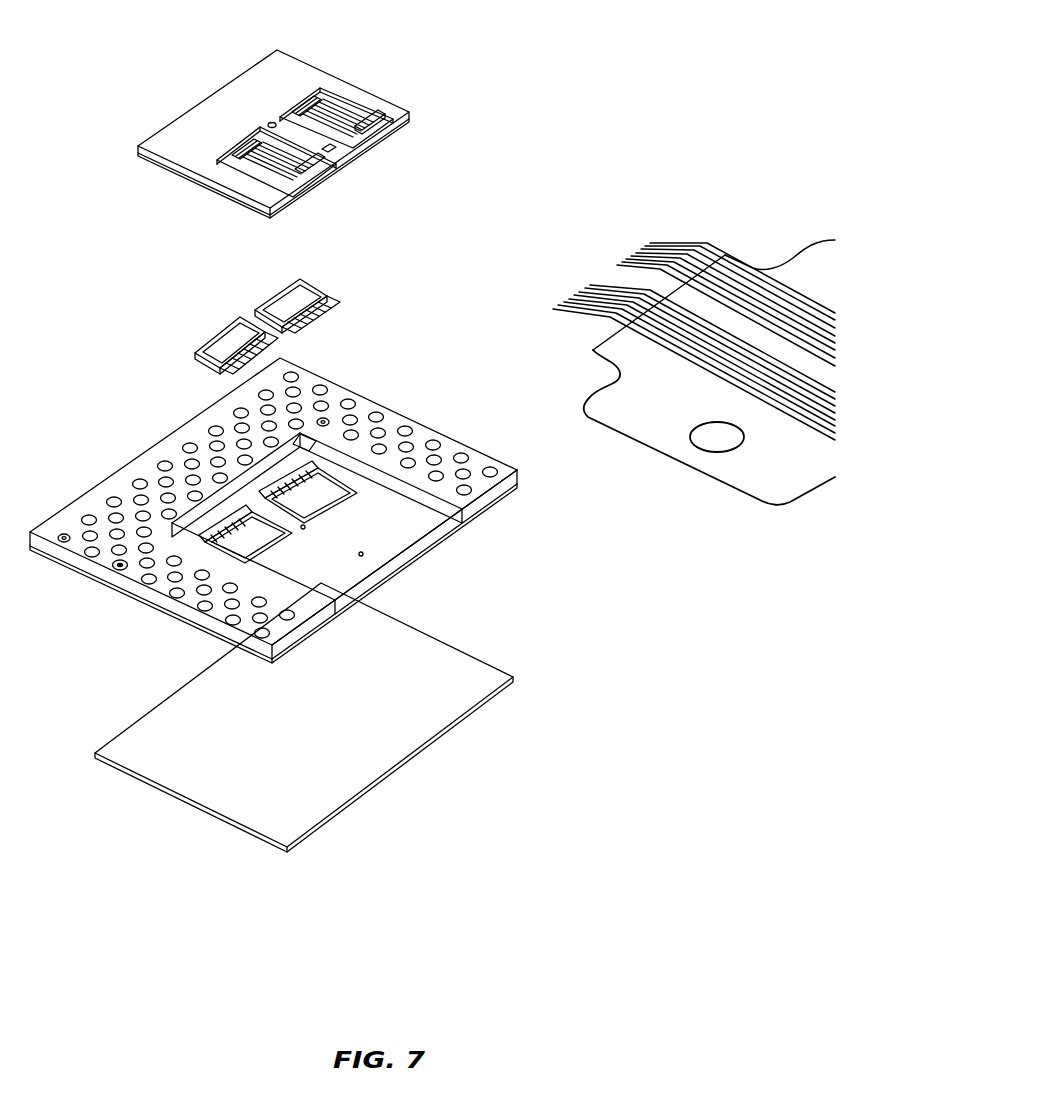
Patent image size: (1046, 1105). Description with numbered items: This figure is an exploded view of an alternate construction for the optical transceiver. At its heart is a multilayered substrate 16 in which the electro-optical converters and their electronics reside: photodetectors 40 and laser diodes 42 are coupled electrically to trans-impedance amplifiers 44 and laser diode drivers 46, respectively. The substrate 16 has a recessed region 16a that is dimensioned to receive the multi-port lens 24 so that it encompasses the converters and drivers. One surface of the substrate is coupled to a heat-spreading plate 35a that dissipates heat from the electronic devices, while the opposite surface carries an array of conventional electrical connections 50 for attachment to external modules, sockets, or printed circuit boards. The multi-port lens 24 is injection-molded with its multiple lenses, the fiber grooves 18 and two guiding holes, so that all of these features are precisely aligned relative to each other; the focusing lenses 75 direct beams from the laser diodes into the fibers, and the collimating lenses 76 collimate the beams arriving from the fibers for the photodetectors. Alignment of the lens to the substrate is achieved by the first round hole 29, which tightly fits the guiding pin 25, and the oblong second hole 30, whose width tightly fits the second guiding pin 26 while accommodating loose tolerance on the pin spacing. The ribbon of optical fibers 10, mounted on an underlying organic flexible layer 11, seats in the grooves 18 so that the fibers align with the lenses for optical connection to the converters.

The optical fibers 10 is at (664, 244).
The organic flexible layer 11 is at (740, 472).
The multilayered substrate 16 is at (82, 490).
The recessed region of the substrate 16a is at (428, 540).
The fiber grooves 18 is at (362, 120).
The multi-port lens 24 is at (284, 58).
The guiding pin 25 is at (303, 525).
The second guiding pin 26 is at (363, 556).
The first round hole 29 is at (272, 122).
The second hole 30 is at (333, 150).
The heat-spreading plate 35a is at (386, 745).
The photodetectors 40 is at (236, 362).
The laser diodes 42 is at (340, 293).
The trans-impedance amplifiers 44 is at (206, 340).
The laser diode drivers 46 is at (305, 277).
The electrical connections 50 is at (146, 575).
The focusing lenses 75 is at (328, 98).
The collimating lenses 76 is at (237, 162).